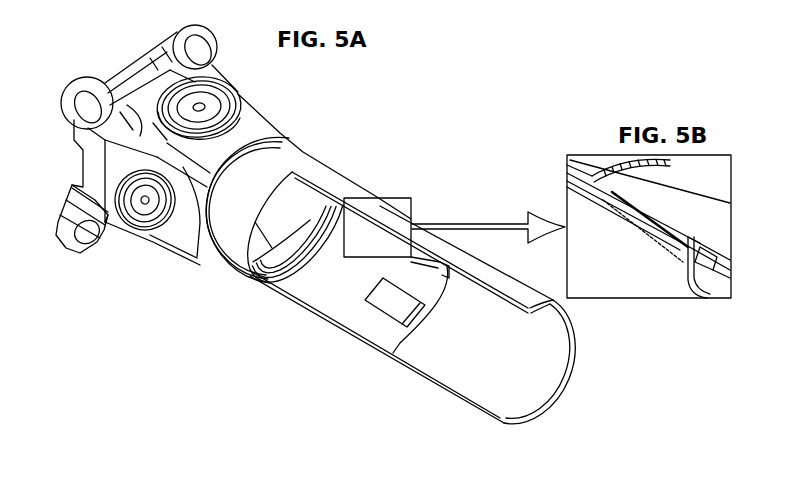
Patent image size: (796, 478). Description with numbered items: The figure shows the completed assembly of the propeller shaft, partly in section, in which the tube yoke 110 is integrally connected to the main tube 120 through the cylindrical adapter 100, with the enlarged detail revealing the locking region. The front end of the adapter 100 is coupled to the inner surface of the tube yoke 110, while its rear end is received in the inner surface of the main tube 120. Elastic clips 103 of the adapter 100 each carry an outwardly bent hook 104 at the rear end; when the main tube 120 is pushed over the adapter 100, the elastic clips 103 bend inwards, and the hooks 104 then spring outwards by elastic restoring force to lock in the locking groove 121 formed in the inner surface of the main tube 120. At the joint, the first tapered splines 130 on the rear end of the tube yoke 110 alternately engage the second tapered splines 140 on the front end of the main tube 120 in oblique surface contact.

In FIG. 5A, the adapter 100 is at (311, 294).
In FIG. 5A, the tube yoke 110 is at (333, 169).
In FIG. 5A, the main tube 120 is at (388, 361).
In FIG. 5B, the first tapered splines 130 is at (595, 165).
In FIG. 5B, the second tapered splines 140 is at (611, 193).
In FIG. 5B, the locking groove 121 is at (703, 250).
In FIG. 5B, the elastic clips 103 is at (654, 228).
In FIG. 5B, the hook 104 is at (703, 267).